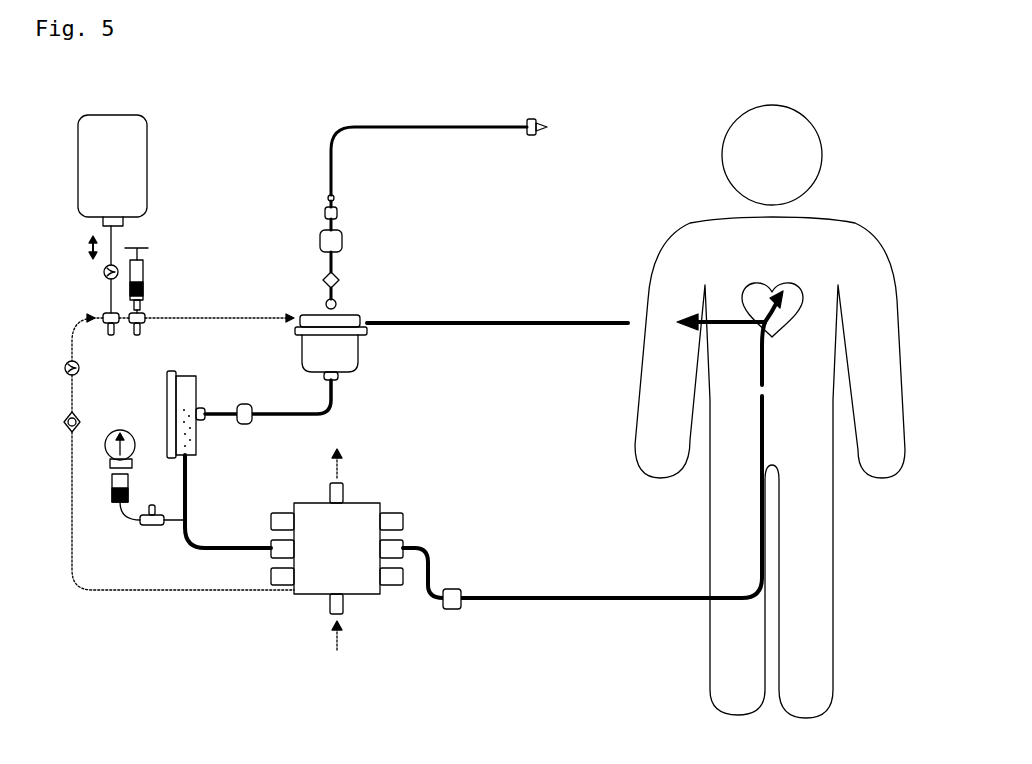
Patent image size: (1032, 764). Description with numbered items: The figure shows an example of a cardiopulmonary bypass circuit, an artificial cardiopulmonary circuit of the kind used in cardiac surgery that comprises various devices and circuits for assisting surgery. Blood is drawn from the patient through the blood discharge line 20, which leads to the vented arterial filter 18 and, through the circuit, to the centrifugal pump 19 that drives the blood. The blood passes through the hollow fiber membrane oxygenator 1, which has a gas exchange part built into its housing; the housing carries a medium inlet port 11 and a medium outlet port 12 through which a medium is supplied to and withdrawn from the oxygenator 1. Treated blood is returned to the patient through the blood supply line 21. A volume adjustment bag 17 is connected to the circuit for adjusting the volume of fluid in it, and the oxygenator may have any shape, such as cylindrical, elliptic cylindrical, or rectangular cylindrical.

The hollow fiber membrane oxygenator 1 is at (336, 542).
The medium inlet port 11 is at (330, 612).
The medium outlet port 12 is at (326, 489).
The volume adjustment bag 17 is at (142, 115).
The vented arterial filter 18 is at (364, 366).
The centrifugal pump 19 is at (197, 378).
The blood discharge line 20 is at (486, 319).
The blood supply line 21 is at (565, 604).